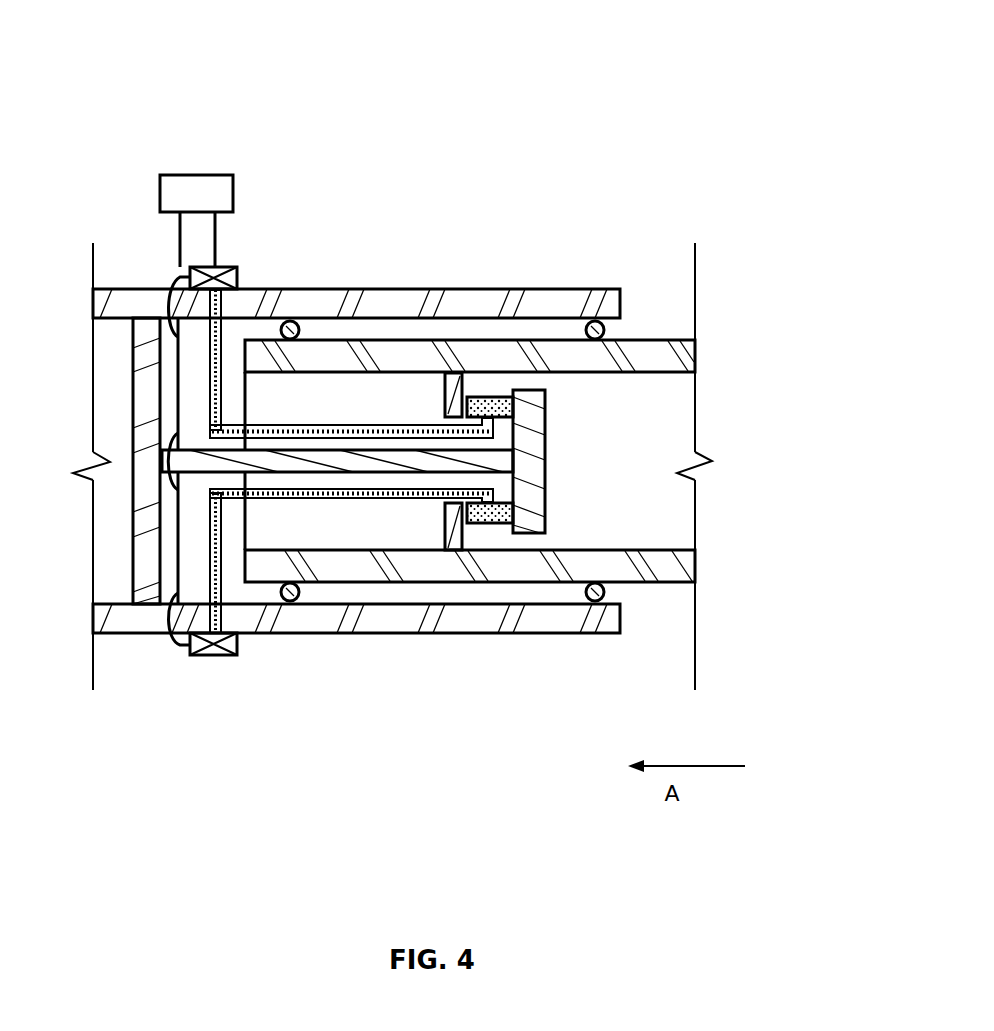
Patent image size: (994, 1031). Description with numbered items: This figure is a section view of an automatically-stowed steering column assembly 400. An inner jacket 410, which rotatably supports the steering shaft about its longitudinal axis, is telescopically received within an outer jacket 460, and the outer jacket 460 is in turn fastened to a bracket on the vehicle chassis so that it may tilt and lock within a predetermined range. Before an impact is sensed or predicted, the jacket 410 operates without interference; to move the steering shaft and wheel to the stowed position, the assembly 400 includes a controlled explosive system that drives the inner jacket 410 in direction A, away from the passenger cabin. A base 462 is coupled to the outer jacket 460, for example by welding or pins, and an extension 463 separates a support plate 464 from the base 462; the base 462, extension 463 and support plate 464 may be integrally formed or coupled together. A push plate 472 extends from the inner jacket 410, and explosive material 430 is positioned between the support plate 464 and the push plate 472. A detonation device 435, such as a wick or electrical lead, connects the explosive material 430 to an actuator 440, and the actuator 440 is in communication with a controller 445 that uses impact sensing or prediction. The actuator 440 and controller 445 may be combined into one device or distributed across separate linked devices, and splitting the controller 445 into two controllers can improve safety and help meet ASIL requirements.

The steering column assembly 400 is at (696, 100).
The jacket 410 is at (648, 340).
The explosive material 430 is at (482, 397).
The detonation device 435 is at (327, 426).
The actuator 440 is at (238, 278).
The controller 445 is at (195, 188).
The outer jacket 460 is at (547, 300).
The base 462 is at (137, 555).
The extension 463 is at (352, 462).
The support plate 464 is at (533, 423).
The push plate 472 is at (444, 397).